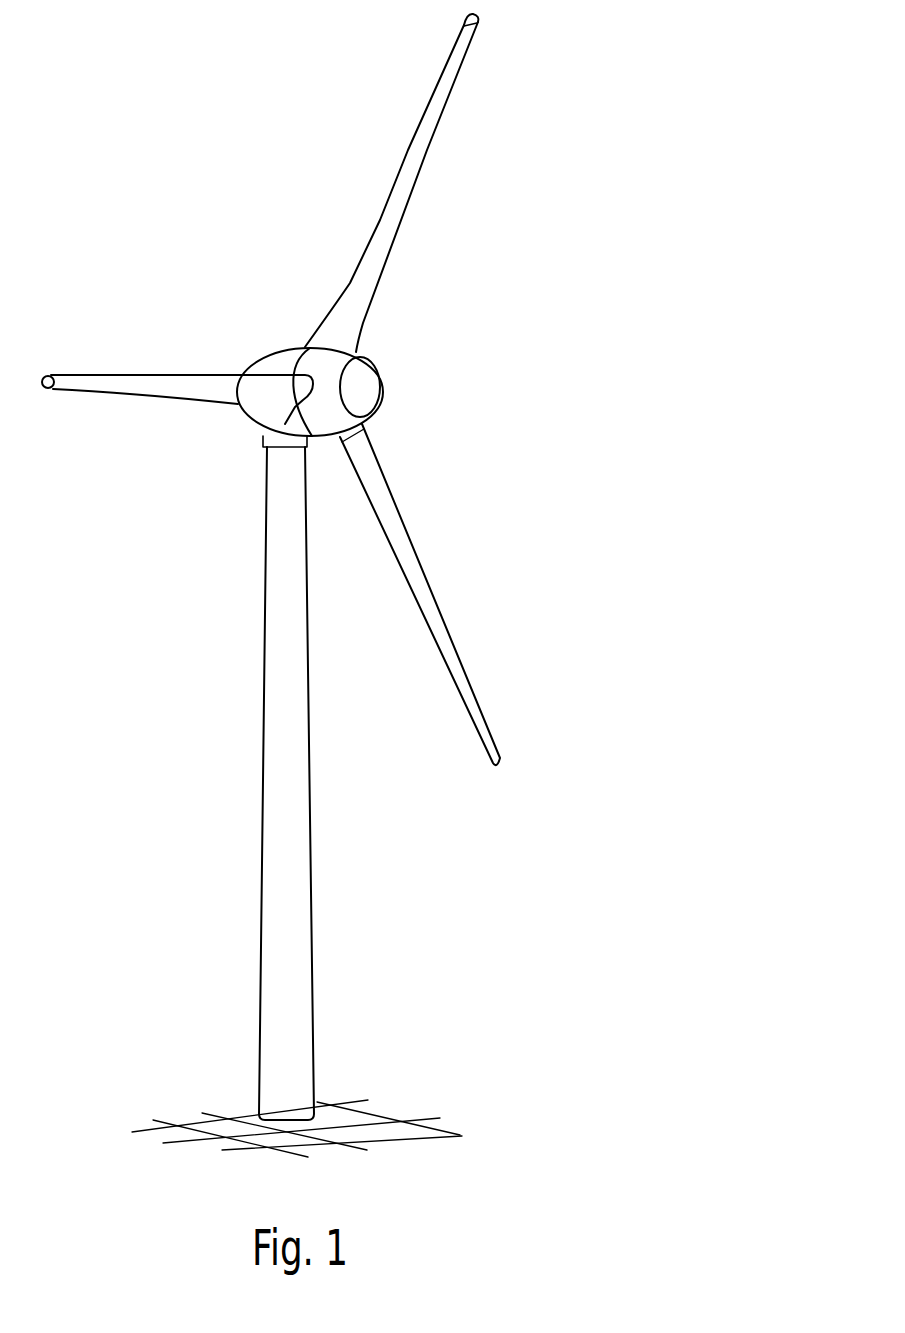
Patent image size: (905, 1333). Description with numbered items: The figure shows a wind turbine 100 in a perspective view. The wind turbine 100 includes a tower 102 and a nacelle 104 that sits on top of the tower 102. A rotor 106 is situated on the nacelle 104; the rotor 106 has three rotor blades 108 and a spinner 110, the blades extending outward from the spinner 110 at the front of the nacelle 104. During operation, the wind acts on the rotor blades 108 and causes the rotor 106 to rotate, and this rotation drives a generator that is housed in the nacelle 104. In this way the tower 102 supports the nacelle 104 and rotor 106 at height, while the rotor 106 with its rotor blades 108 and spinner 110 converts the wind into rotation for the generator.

The wind turbine 100 is at (198, 534).
The tower 102 is at (305, 872).
The nacelle 104 is at (272, 360).
The rotor 106 is at (524, 279).
The rotor blades 108 is at (397, 173).
The spinner 110 is at (365, 385).